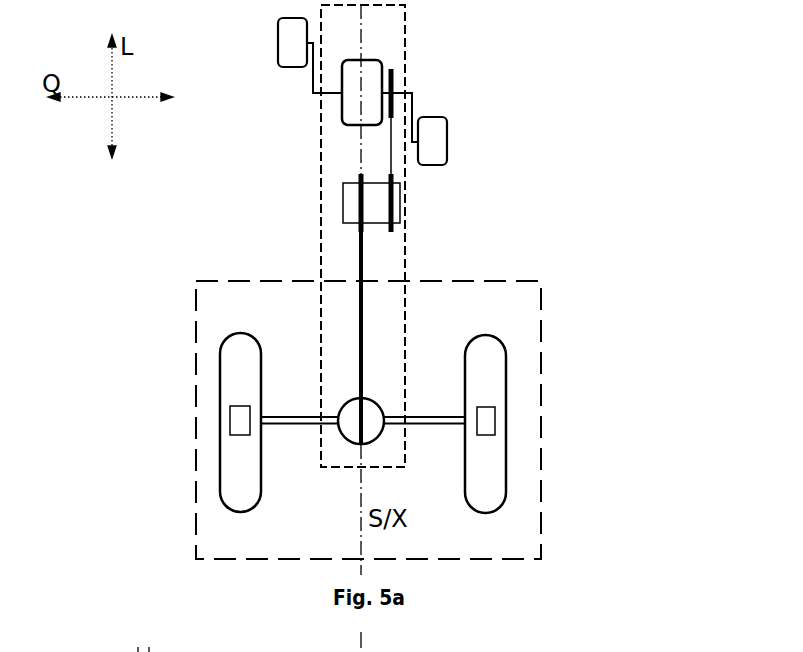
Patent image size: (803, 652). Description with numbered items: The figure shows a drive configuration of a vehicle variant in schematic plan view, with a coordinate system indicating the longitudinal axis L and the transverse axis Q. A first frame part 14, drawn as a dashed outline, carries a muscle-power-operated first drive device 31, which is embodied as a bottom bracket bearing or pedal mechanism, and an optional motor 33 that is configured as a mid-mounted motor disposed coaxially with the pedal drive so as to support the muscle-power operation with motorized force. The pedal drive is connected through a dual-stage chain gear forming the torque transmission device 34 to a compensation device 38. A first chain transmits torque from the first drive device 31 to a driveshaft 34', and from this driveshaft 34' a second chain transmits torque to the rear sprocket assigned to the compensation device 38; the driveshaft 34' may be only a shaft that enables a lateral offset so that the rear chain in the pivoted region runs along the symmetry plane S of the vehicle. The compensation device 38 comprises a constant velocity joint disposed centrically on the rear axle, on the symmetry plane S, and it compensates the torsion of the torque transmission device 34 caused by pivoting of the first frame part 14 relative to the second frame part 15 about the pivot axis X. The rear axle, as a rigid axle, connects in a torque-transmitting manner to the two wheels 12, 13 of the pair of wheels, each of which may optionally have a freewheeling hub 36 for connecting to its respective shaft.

The wheel 12 is at (492, 362).
The wheel 13 is at (230, 367).
The first frame part 14 is at (417, 67).
The second frame part 15 is at (525, 280).
The first drive device 31 is at (440, 138).
The motor 33 is at (345, 107).
The torque transmission device 34 is at (444, 161).
The driveshaft 34' is at (306, 206).
The freewheeling hub 36 is at (487, 427).
The compensation device 38 is at (350, 443).